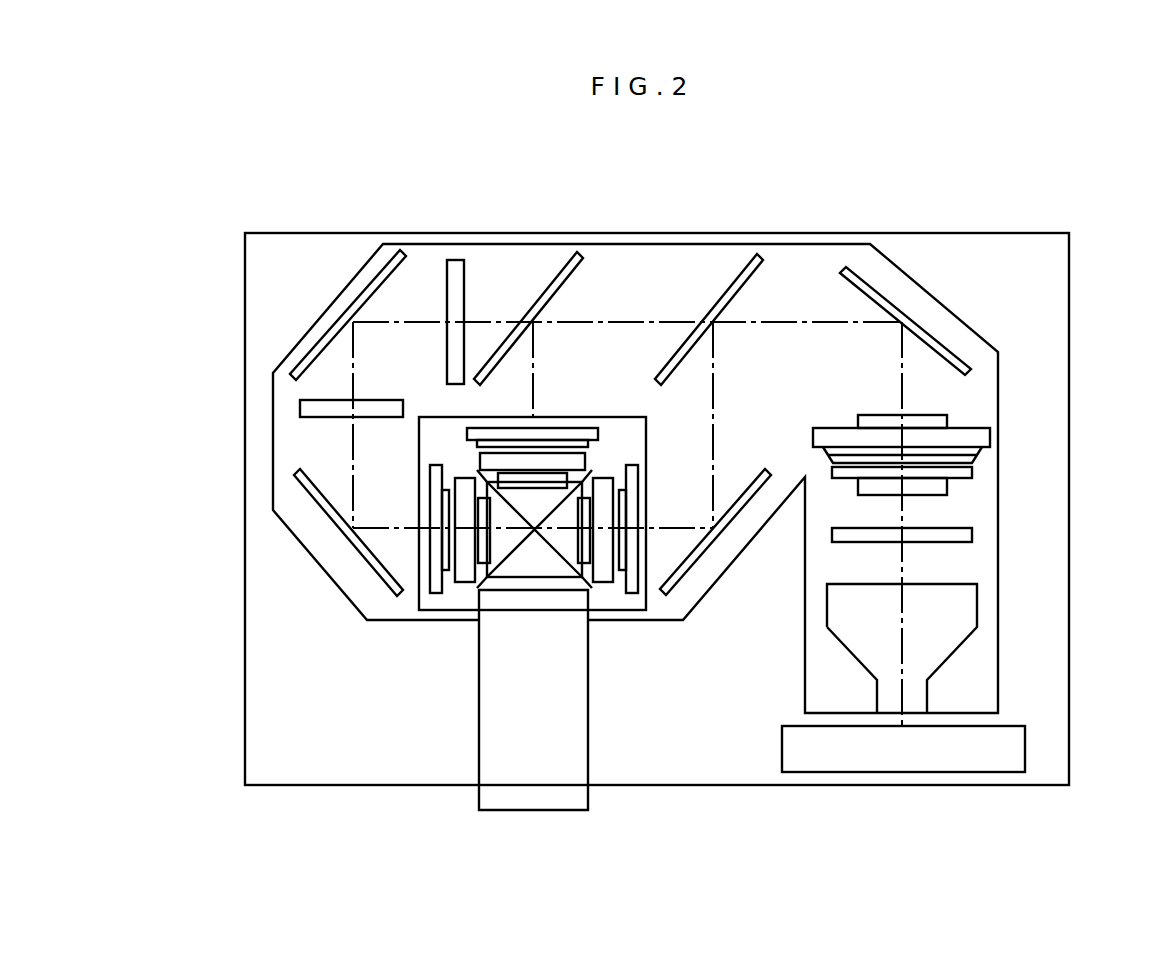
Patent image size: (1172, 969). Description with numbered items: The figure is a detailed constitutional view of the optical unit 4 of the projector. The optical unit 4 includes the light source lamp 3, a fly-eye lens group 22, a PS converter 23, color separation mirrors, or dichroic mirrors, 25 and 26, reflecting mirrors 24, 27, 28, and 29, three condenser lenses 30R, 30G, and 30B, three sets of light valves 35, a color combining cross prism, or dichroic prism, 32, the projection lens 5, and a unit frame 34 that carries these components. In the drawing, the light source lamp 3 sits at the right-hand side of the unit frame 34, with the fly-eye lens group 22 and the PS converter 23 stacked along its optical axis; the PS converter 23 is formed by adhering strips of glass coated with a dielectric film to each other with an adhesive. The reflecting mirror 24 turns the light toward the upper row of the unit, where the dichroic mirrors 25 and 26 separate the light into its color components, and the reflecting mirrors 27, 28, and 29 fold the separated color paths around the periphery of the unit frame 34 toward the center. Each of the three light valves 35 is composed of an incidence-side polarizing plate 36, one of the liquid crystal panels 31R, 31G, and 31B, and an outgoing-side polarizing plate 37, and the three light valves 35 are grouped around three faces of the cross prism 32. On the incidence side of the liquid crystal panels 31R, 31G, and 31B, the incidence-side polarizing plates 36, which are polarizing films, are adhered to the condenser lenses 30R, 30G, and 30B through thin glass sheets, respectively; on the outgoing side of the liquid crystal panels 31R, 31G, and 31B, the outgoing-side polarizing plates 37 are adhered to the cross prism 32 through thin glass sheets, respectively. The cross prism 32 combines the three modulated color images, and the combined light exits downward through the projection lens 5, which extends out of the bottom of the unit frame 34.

The light source lamp 3 is at (965, 609).
The optical unit 4 is at (407, 232).
The projection lens 5 is at (497, 783).
The fly-eye lens group 22 is at (985, 438).
The PS converter 23 is at (972, 472).
The reflecting mirror 24 is at (880, 290).
The color separation mirror (dichroic mirror) 25 is at (720, 300).
The color separation mirror (dichroic mirror) 26 is at (553, 290).
The reflecting mirror 27 is at (368, 278).
The reflecting mirror 28 is at (323, 513).
The reflecting mirror 29 is at (703, 563).
The condenser lens 30R is at (430, 560).
The condenser lens 30G is at (553, 470).
The condenser lens 30B is at (635, 555).
The liquid crystal panel 31R is at (465, 572).
The liquid crystal panel 31G is at (585, 455).
The liquid crystal panel 31B is at (600, 573).
The color combining cross prism (dichroic prism) 32 is at (534, 562).
The unit frame 34 is at (310, 333).
The light valve 35 is at (641, 606).
The incidence-side polarizing plate 36 is at (527, 432).
The outgoing-side polarizing plate 37 is at (510, 443).